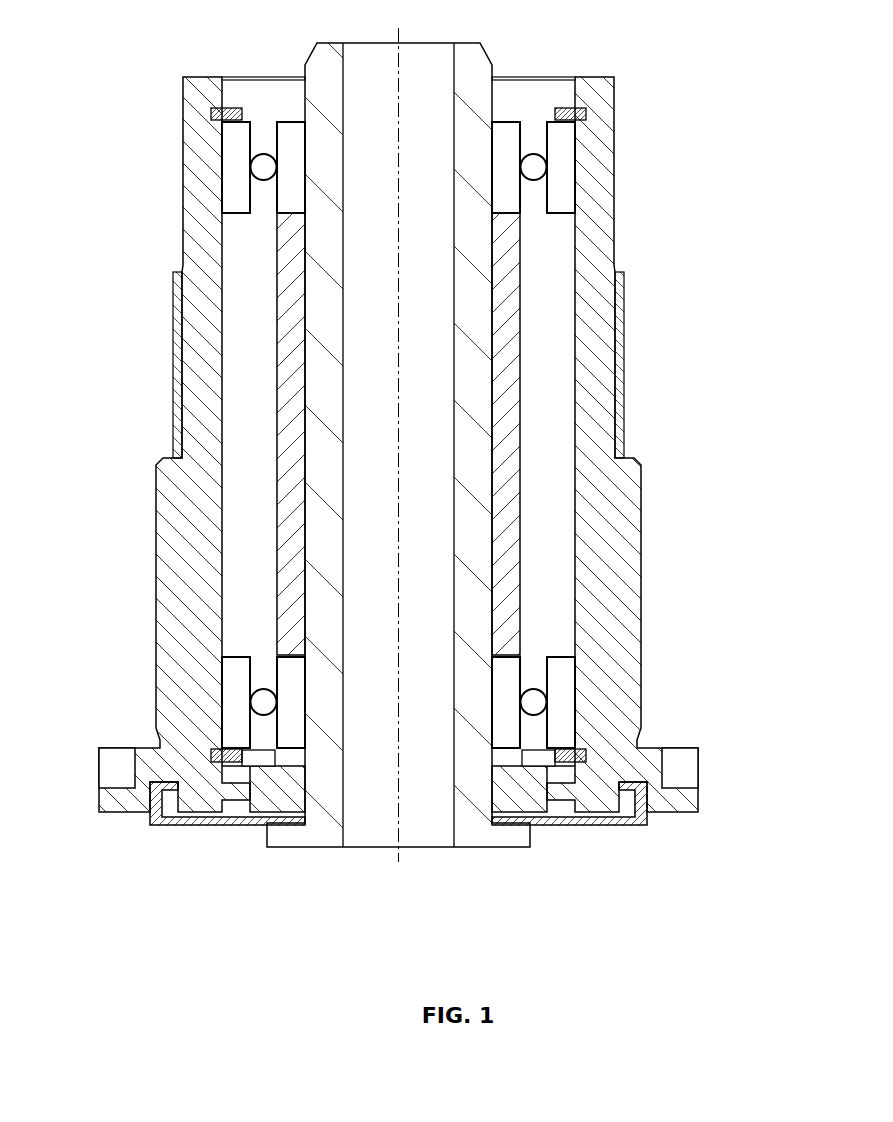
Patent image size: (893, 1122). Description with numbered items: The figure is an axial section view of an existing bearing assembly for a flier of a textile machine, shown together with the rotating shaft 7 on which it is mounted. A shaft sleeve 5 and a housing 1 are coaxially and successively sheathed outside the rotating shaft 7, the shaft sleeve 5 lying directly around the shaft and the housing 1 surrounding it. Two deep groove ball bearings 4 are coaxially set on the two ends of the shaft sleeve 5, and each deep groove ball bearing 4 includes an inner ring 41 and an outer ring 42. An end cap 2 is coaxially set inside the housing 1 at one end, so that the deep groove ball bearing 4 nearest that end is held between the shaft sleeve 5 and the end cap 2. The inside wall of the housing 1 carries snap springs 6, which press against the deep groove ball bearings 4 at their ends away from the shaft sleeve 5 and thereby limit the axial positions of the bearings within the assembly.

The housing 1 is at (381, 444).
The end cap 2 is at (398, 833).
The deep groove ball bearing 4 is at (713, 128).
The inner ring 41 is at (504, 435).
The outer ring 42 is at (476, 429).
The shaft sleeve 5 is at (502, 434).
The snap spring 6 is at (469, 381).
The rotating shaft 7 is at (367, 426).